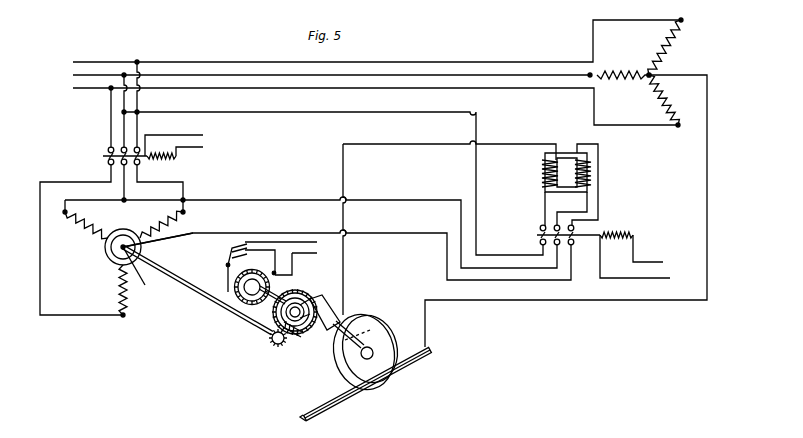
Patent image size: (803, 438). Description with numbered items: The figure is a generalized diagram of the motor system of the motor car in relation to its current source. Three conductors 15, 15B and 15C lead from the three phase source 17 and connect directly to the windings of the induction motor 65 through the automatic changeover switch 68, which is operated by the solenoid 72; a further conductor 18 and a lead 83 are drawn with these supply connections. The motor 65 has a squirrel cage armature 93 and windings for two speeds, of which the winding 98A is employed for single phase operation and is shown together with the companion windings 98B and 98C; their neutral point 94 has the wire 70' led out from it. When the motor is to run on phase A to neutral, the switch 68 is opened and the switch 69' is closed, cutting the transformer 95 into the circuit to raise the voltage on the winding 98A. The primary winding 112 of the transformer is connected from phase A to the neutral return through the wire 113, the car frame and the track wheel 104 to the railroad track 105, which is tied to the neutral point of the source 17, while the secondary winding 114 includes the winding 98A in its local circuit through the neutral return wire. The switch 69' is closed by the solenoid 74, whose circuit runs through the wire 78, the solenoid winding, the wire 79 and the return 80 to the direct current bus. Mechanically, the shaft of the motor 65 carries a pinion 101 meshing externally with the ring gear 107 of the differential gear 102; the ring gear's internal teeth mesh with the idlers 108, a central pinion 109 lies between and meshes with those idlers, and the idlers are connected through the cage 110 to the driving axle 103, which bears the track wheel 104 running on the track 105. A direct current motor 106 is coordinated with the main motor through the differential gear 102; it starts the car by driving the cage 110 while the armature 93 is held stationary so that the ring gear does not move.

The conductor 15 is at (193, 62).
The conductor 15B is at (173, 75).
The conductor 15C is at (187, 88).
The three phase source 17 is at (666, 63).
The conductor 18 is at (707, 175).
The automatic changeover switch 68 is at (103, 155).
The solenoid 72 is at (185, 152).
The conductor 83 is at (198, 135).
The return 80 is at (203, 147).
The single phase winding 98A is at (86, 222).
The resistor 98B is at (165, 225).
The resistor 98C is at (118, 290).
The squirrel cage armature 93 is at (108, 257).
The induction motor 65 is at (150, 256).
The neutral point 94 is at (143, 271).
The differential gear 102 is at (237, 325).
The pinion 101 is at (269, 343).
The wire 70' is at (271, 255).
The direct current motor 106 is at (261, 281).
The ring gear 107 is at (306, 288).
The idlers 108 is at (302, 300).
The central pinion 109 is at (296, 334).
The cage 110 is at (330, 304).
The driving axle 103 is at (338, 330).
The track wheel 104 is at (383, 338).
The railroad track 105 is at (347, 397).
The wire 113 is at (345, 262).
The transformer 95 is at (563, 152).
The primary winding 112 is at (542, 168).
The secondary winding 114 is at (591, 168).
The switch 69' is at (550, 235).
The solenoid 74 is at (619, 233).
The wire 78 is at (648, 262).
The wire 79 is at (650, 278).